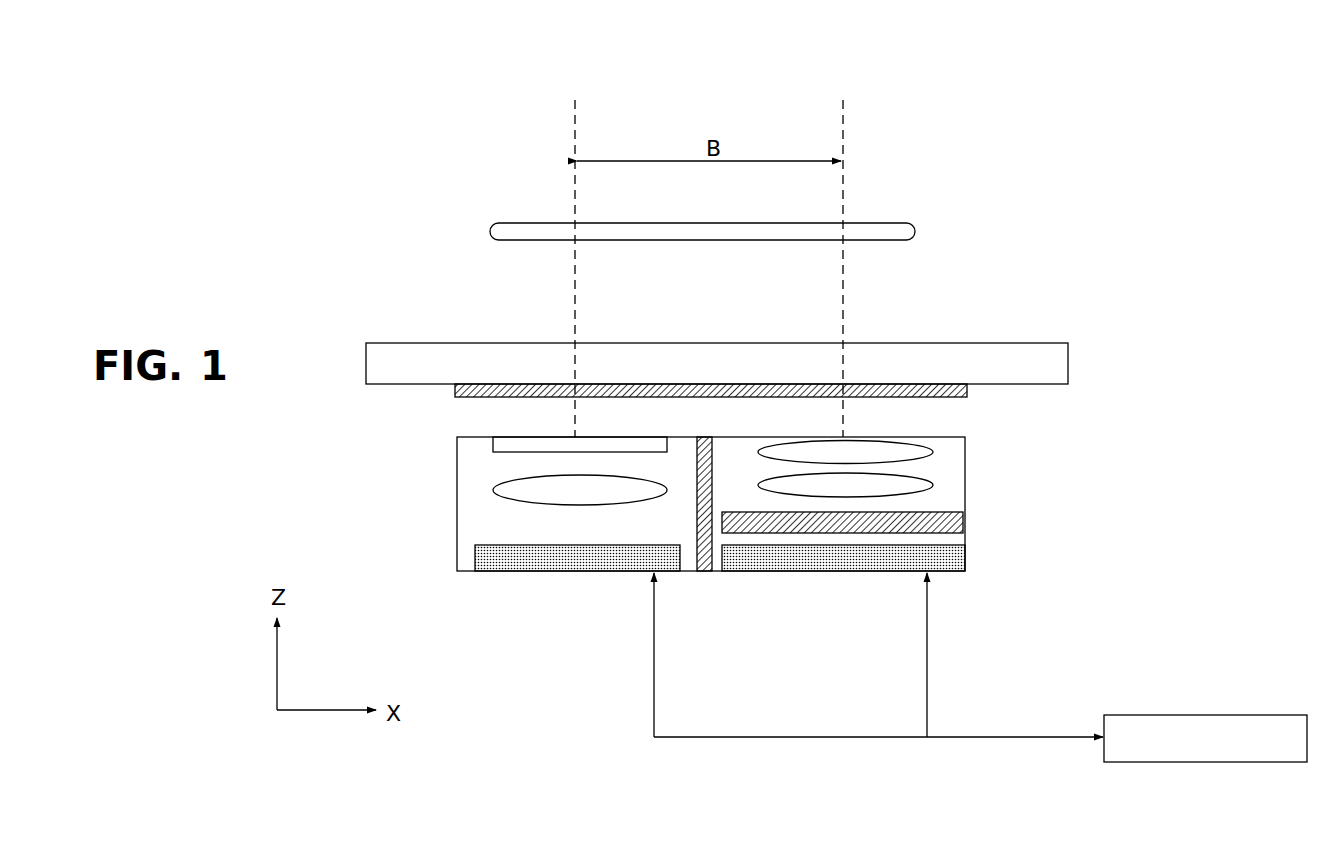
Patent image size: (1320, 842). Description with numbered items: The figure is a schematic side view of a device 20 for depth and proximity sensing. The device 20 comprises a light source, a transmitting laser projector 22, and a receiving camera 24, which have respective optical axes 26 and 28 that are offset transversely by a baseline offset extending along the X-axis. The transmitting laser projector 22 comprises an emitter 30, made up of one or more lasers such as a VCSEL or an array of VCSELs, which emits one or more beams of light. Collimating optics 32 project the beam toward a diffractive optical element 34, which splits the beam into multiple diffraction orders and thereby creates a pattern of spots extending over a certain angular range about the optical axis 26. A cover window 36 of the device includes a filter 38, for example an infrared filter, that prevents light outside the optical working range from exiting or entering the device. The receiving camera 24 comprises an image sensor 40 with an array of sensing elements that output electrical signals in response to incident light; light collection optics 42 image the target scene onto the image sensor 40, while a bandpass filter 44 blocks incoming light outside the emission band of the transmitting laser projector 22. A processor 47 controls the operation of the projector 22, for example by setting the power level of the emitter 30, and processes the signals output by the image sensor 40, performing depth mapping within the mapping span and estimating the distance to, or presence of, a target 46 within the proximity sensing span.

The device 20 is at (440, 84).
The transmitting laser projector 22 is at (707, 597).
The receiving camera 24 is at (965, 597).
The optical axis 26 is at (573, 122).
The optical axis 28 is at (846, 122).
The emitter 30 is at (475, 560).
The collimating optics 32 is at (493, 490).
The diffractive optical element 34 is at (493, 445).
The cover window 36 is at (402, 342).
The filter 38 is at (968, 390).
The image sensor 40 is at (957, 556).
The light collection optics 42 is at (940, 440).
The bandpass filter 44 is at (957, 525).
The target 46 is at (915, 229).
The processor 47 is at (1280, 715).